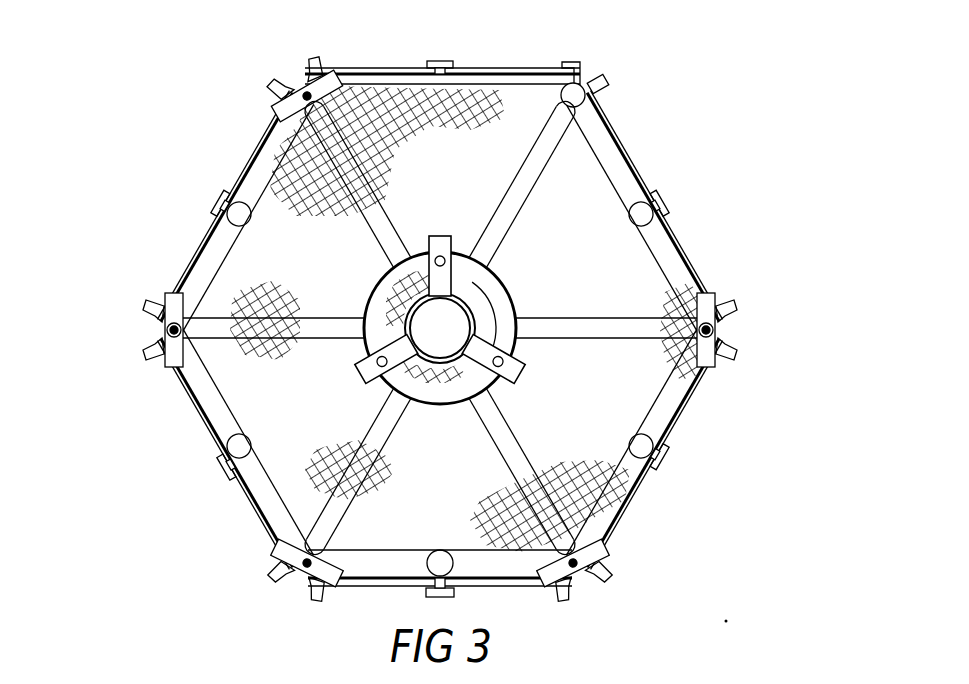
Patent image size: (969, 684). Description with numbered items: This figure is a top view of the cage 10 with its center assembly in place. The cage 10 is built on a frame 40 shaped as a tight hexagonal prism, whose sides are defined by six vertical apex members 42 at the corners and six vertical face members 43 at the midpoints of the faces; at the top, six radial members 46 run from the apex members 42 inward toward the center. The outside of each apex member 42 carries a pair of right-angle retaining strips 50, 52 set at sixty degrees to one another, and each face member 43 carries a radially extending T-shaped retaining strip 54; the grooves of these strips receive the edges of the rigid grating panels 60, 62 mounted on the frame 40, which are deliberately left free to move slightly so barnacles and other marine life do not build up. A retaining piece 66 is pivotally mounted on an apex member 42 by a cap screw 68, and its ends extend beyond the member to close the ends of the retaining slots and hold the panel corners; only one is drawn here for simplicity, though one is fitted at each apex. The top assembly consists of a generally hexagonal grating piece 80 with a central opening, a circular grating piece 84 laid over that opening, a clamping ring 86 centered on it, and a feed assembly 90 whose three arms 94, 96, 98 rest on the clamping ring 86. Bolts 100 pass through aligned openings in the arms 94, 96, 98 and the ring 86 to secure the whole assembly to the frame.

The cage 10 is at (779, 121).
The frame 40 is at (693, 223).
The vertical apex member 42 is at (545, 68).
The vertical face member 43 is at (214, 233).
The radial member 46 is at (598, 320).
The right-angle retaining strip 50 is at (719, 292).
The right-angle retaining strip 52 is at (598, 78).
The T-shaped retaining strip 54 is at (236, 200).
The rigid grating panel 60 is at (717, 295).
The panel 62 is at (626, 136).
The retaining piece 66 is at (166, 346).
The cap screw 68 is at (170, 327).
The hexagonal grating piece 80 is at (452, 505).
The circular grating piece 84 is at (396, 283).
The clamping ring 86 is at (480, 310).
The feed assembly 90 is at (484, 310).
The arm 94 is at (375, 370).
The arm 96 is at (509, 382).
The arm 98 is at (446, 243).
The bolt 100 is at (512, 356).